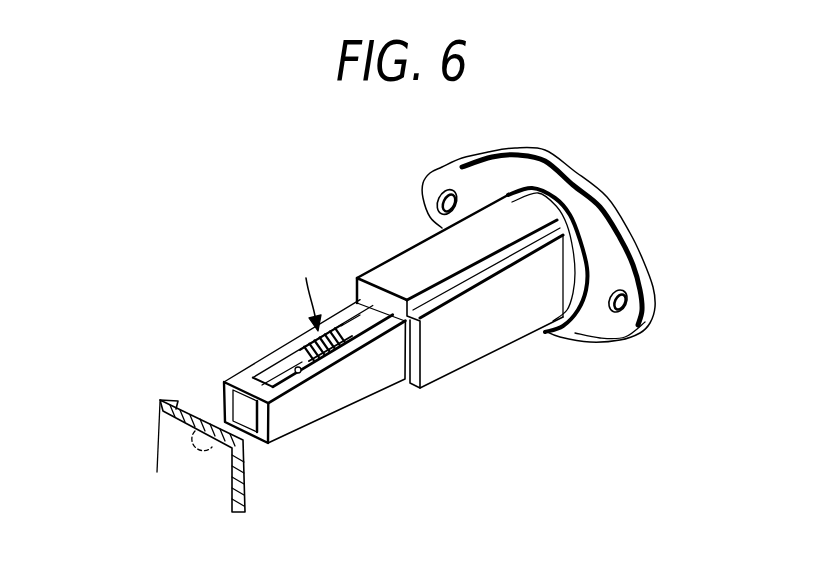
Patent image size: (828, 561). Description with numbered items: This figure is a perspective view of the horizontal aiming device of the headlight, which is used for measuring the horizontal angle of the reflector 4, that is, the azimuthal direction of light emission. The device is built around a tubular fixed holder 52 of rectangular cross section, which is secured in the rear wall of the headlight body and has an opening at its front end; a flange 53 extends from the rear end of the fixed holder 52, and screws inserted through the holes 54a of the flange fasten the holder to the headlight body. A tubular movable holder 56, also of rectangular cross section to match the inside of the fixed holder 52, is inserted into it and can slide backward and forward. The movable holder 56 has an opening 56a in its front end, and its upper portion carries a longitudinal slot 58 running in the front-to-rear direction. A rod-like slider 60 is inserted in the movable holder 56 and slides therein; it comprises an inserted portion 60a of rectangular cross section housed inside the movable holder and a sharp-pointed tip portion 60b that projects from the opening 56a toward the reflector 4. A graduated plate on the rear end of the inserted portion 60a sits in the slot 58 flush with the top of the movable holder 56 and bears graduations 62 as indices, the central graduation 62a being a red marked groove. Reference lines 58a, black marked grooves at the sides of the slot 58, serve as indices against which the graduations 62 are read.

The reflector 4 is at (172, 458).
The fixed holder 52 is at (505, 355).
The flange 53 is at (552, 160).
The holes 54a is at (443, 188).
The movable holder 56 is at (315, 440).
The opening 56a is at (270, 446).
The longitudinal slot 58 is at (300, 373).
The reference lines 58a is at (312, 338).
The slider 60 is at (215, 397).
The inserted portion 60a is at (278, 376).
The sharp-pointed tip portion 60b is at (215, 422).
The graduations 62 is at (306, 288).
The central graduation 62a is at (341, 326).